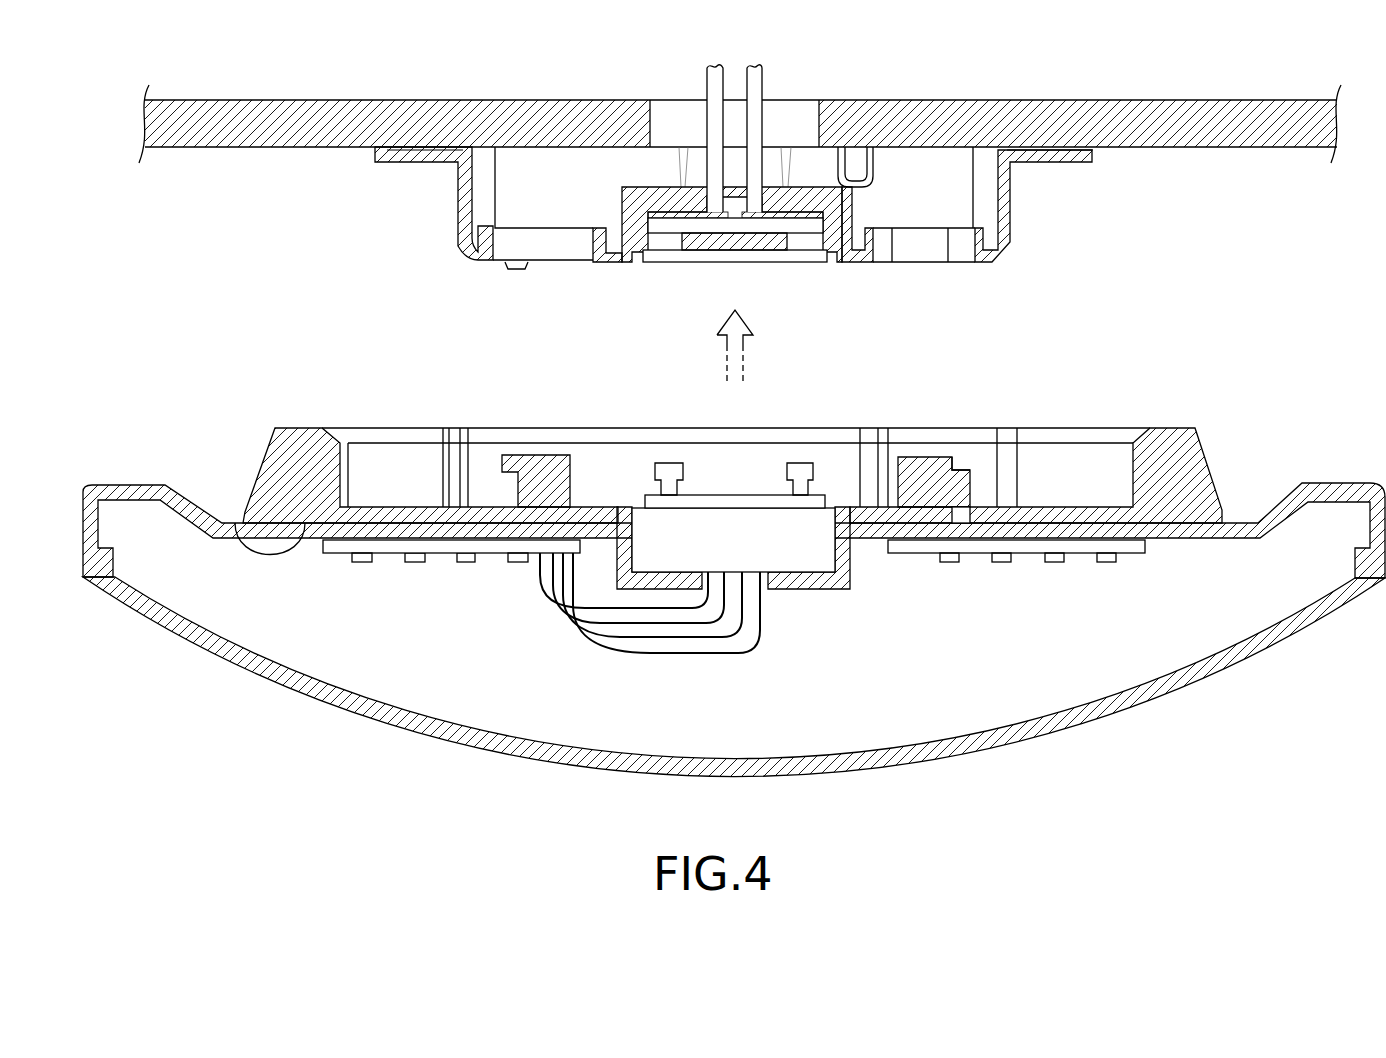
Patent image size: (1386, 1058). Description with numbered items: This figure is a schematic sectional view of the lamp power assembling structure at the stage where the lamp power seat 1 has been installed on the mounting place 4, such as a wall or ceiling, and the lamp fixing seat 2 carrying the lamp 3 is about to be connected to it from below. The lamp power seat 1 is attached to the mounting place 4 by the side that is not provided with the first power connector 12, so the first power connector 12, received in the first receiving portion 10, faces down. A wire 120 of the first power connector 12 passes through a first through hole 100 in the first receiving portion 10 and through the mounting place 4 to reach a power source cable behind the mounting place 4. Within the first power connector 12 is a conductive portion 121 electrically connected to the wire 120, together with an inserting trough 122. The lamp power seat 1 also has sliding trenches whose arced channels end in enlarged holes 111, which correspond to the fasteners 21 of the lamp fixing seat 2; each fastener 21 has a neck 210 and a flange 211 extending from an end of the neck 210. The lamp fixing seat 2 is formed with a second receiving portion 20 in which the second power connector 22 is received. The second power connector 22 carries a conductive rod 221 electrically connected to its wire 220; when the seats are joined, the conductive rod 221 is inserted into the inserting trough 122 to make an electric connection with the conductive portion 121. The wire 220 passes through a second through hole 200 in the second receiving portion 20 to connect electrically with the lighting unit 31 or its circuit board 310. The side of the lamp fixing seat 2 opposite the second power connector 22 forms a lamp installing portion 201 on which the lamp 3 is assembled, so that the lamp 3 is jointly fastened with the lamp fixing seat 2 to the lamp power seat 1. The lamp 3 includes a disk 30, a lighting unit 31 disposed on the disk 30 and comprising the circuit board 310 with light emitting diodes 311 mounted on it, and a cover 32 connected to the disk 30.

The lamp power seat 1 is at (749, 243).
The first receiving portion 10 is at (848, 212).
The first through hole 100 is at (733, 193).
The enlarged hole 111 is at (918, 246).
The first power connector 12 is at (693, 200).
The wire 120 is at (712, 86).
The conductive portion 121 is at (678, 219).
The inserting trough 122 is at (803, 242).
The lamp fixing seat 2 is at (732, 414).
The second receiving portion 20 is at (848, 563).
The second through hole 200 is at (761, 584).
The lamp installing portion 201 is at (267, 556).
The fastener 21 is at (928, 372).
The neck 210 is at (944, 490).
The flange 211 is at (961, 462).
The second power connector 22 is at (722, 465).
The wire 220 is at (635, 648).
The conductive rod 221 is at (668, 466).
The lamp 3 is at (734, 612).
The disk 30 is at (1203, 531).
The lighting unit 31 is at (400, 705).
The circuit board 310 is at (392, 549).
The light emitting diodes 311 is at (465, 562).
The cover 32 is at (1107, 708).
The mounting place 4 is at (1272, 134).